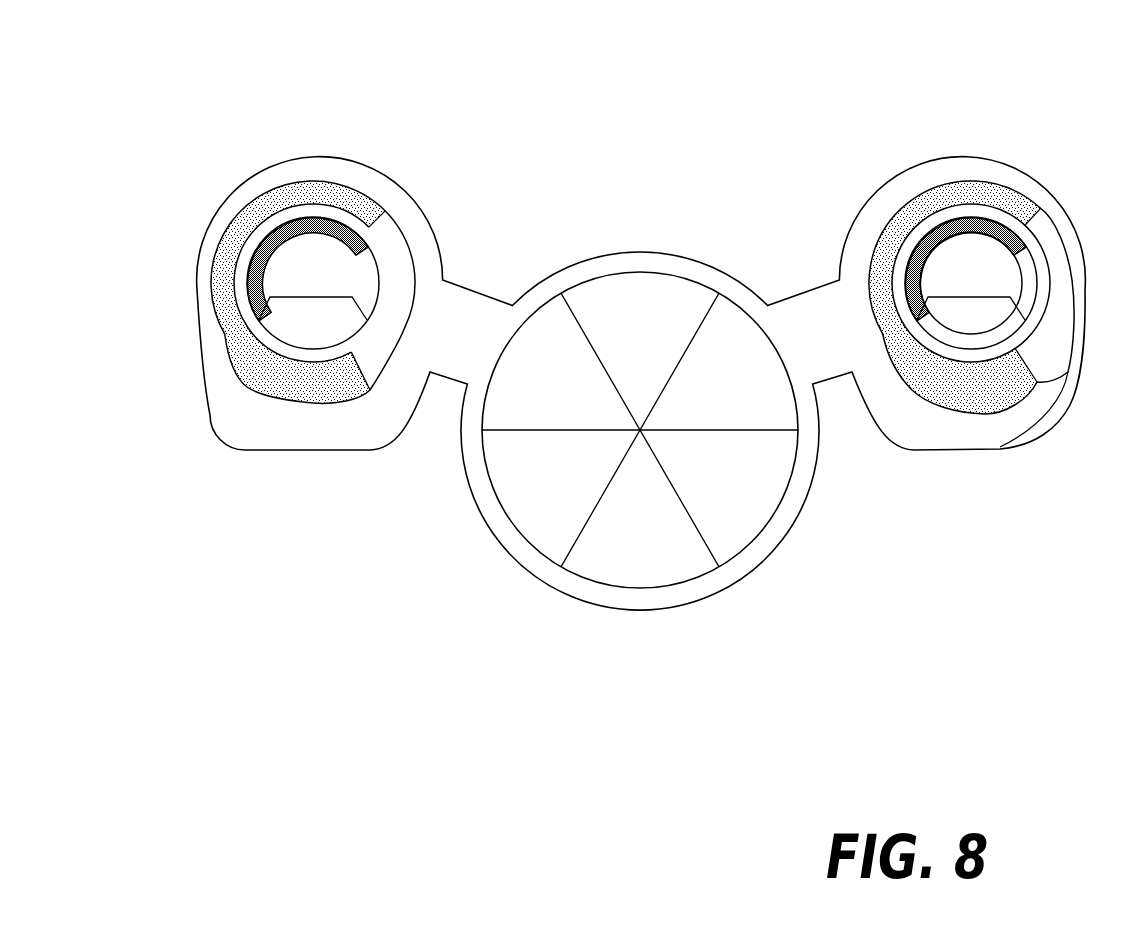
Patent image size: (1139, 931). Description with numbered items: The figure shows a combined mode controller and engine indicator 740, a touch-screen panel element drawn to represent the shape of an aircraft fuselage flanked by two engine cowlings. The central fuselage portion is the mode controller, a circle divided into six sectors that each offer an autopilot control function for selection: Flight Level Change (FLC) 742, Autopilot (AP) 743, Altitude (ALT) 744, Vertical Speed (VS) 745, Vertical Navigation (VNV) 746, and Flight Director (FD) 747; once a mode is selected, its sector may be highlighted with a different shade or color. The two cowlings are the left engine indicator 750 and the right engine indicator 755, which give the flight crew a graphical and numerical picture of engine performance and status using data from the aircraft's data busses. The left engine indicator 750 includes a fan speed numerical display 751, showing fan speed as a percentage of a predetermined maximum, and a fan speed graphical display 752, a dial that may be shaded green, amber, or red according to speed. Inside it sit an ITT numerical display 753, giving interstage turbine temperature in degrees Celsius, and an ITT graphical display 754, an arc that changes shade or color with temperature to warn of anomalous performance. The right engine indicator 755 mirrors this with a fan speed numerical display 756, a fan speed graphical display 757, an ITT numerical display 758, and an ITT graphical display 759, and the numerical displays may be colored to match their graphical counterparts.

The combined mode controller and engine indicator 740 is at (176, 117).
The Flight Level Change (FLC) 742 is at (548, 397).
The Autopilot (AP) 743 is at (640, 352).
The Altitude (ALT) 744 is at (727, 397).
The Vertical Speed (VS) 745 is at (552, 488).
The Vertical Navigation (VNV) 746 is at (640, 547).
The Flight Director (FD) 747 is at (727, 488).
The left engine indicator 750 is at (315, 294).
The fan speed numerical display 751 is at (244, 421).
The fan speed graphical display 752 is at (330, 195).
The ITT numerical display 753 is at (330, 315).
The ITT graphical display 754 is at (358, 252).
The right engine indicator 755 is at (1025, 218).
The fan speed numerical display 756 is at (1100, 414).
The fan speed graphical display 757 is at (977, 271).
The ITT numerical display 758 is at (950, 314).
The ITT graphical display 759 is at (1028, 249).